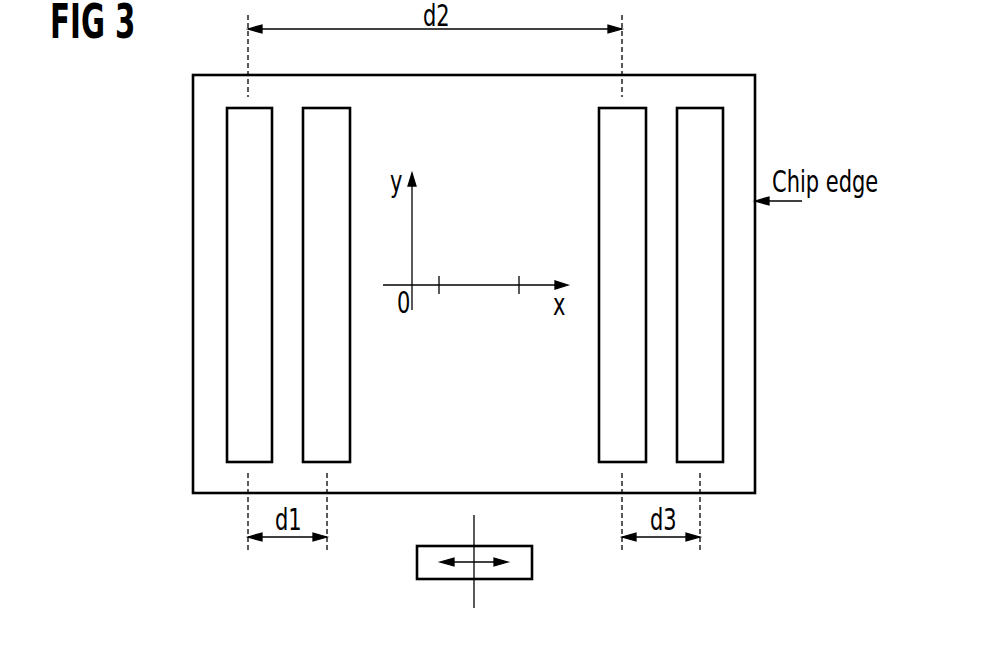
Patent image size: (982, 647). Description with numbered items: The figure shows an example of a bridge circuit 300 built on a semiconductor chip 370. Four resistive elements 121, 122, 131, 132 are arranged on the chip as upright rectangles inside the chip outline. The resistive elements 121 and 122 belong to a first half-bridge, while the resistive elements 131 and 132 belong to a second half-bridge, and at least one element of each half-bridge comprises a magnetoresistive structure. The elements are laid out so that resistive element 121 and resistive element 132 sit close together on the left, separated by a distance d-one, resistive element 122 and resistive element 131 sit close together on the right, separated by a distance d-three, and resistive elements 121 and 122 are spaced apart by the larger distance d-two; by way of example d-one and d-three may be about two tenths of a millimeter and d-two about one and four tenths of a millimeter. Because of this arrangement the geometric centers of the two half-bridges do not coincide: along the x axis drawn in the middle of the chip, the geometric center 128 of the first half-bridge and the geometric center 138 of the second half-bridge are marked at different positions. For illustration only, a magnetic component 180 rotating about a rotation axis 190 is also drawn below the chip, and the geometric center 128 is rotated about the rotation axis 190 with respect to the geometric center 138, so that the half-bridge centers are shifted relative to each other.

The resistive element 121 is at (237, 127).
The resistive element 132 is at (340, 125).
The resistive element 122 is at (607, 127).
The resistive element 131 is at (712, 127).
The semiconductor chip 370 is at (755, 402).
The geometric center of the first half-bridge 128 is at (438, 301).
The geometric center of the second half-bridge 138 is at (520, 301).
The magnetic component 180 is at (532, 560).
The rotation axis 190 is at (474, 522).
The bridge circuit 300 is at (878, 572).